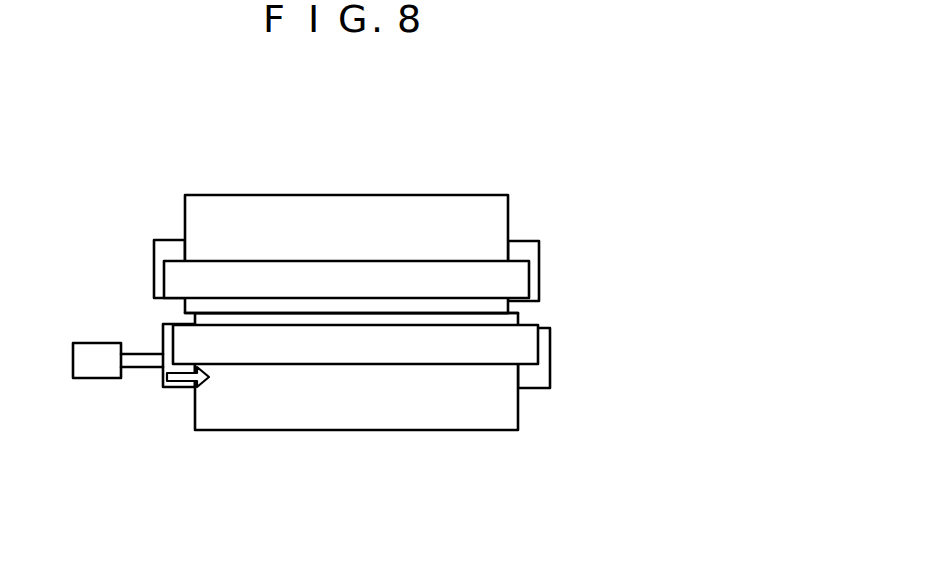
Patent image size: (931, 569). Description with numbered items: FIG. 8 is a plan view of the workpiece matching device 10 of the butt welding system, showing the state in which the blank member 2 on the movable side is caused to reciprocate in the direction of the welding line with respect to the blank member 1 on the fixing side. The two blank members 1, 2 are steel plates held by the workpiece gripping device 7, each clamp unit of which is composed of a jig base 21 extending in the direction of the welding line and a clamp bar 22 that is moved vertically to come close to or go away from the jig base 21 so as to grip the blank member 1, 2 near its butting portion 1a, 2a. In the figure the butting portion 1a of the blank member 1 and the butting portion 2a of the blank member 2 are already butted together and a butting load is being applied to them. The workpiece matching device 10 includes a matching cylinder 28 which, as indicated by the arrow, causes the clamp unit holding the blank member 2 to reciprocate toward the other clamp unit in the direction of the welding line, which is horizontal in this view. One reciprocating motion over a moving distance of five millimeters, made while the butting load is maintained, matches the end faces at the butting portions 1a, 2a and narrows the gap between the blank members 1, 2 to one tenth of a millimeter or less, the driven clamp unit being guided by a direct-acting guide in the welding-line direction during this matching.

The blank member 1 is at (390, 218).
The butting portion 1a is at (341, 321).
The blank member 2 is at (428, 413).
The butting portion 2a is at (455, 315).
The workpiece gripping device 7 is at (386, 204).
The workpiece matching device 10 is at (139, 379).
The jig base 21 is at (533, 252).
The clamp bar 22 is at (467, 277).
The matching cylinder 28 is at (95, 345).